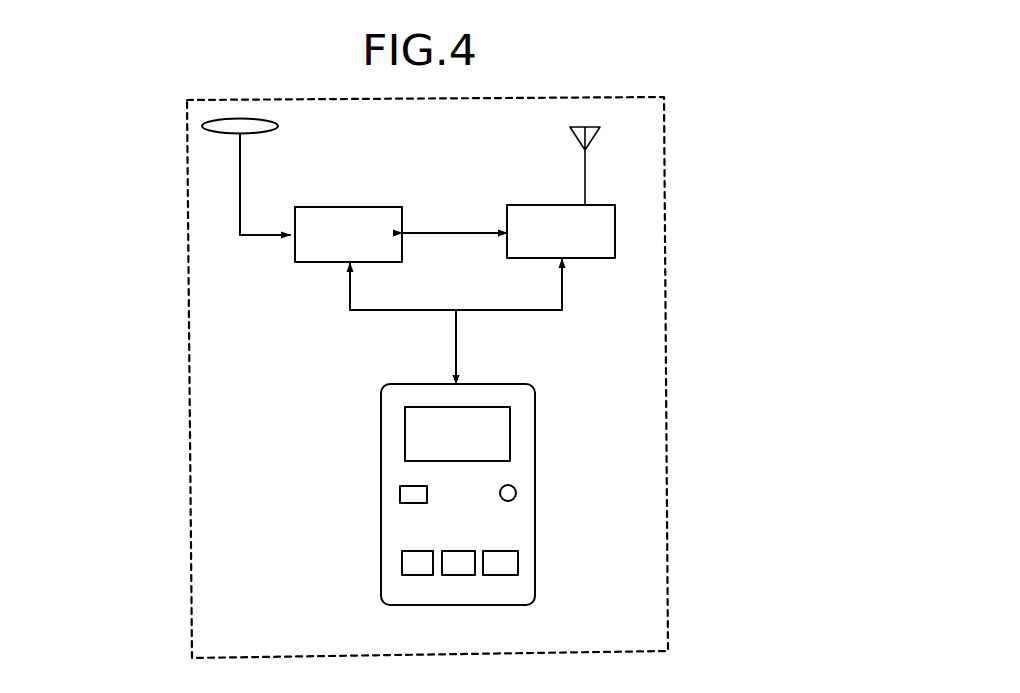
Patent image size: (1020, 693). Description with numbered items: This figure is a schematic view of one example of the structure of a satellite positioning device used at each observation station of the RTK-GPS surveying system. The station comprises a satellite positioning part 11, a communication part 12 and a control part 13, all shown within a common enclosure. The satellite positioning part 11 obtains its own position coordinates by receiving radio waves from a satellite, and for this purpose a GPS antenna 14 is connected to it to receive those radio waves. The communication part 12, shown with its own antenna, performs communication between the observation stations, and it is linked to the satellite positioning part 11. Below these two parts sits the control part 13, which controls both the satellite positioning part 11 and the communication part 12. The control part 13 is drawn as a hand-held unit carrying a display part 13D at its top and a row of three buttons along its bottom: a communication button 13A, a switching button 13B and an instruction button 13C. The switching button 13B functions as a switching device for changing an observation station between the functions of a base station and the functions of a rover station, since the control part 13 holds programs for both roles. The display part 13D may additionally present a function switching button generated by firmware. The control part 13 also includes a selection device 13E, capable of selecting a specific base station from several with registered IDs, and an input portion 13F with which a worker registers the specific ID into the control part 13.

The satellite positioning part 11 is at (317, 252).
The communication part 12 is at (597, 240).
The control part 13 is at (459, 516).
The communication button 13A is at (418, 568).
The switching button 13B is at (460, 568).
The instruction button 13C is at (505, 568).
The display part 13D is at (420, 433).
The selection device 13E is at (516, 493).
The input portion 13F is at (418, 492).
The GPS antenna 14 is at (207, 134).